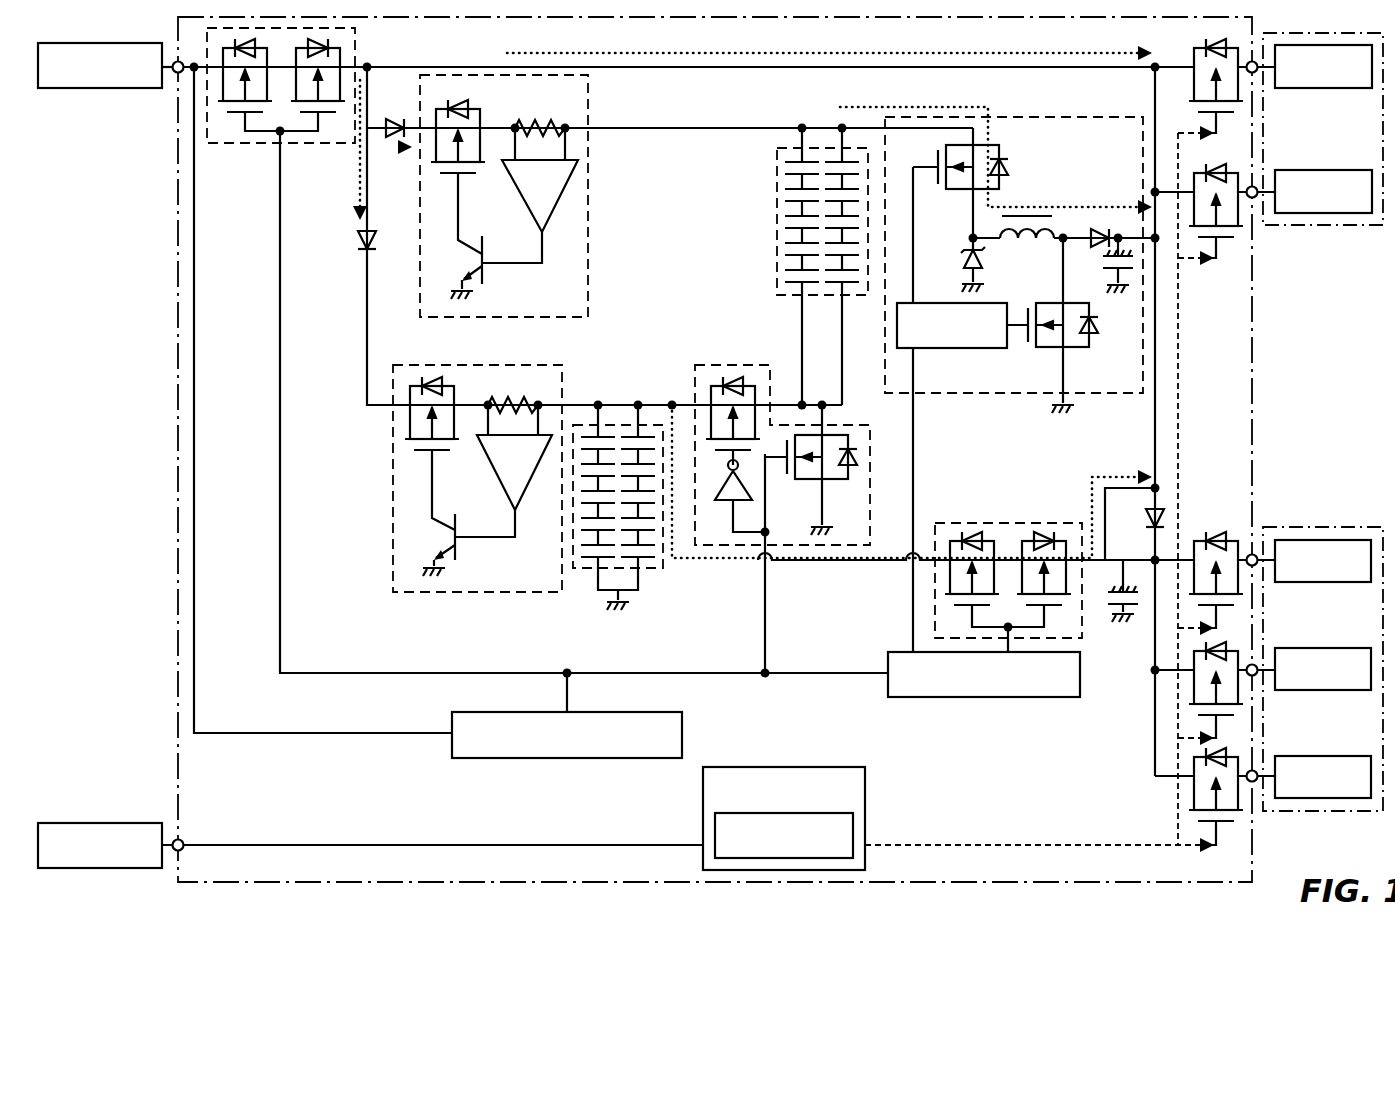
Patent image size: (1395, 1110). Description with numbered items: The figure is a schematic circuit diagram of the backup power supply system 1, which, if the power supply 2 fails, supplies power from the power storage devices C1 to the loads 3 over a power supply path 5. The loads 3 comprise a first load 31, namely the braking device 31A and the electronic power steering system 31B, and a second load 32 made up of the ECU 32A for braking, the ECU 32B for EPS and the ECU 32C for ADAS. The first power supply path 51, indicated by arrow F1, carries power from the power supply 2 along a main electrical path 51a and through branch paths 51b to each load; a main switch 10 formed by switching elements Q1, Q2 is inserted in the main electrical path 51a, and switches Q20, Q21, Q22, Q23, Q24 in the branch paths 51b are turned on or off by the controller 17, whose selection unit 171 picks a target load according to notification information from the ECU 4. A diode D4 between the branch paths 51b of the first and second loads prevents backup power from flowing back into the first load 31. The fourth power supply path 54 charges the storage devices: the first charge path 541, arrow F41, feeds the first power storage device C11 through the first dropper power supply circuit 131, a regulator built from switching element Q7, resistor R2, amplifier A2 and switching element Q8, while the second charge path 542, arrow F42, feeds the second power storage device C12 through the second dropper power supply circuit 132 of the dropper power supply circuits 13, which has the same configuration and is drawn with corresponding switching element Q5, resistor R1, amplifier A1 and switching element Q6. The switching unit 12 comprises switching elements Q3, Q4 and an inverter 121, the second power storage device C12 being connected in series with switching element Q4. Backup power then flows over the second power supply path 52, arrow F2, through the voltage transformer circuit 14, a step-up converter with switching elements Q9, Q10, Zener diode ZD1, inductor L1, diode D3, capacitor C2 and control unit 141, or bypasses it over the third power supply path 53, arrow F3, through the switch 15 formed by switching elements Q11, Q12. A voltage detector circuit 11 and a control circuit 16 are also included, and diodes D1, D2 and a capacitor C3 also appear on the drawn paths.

The backup power supply system 1 is at (178, 215).
The power supply 2 is at (140, 90).
The loads 3 is at (1310, 422).
The ECU 4 is at (137, 830).
The power supply path 5 is at (686, 49).
The main switch 10 is at (301, 115).
The voltage detector circuit 11 is at (520, 759).
The switching unit 12 is at (782, 464).
The inverter 121 is at (723, 500).
The dropper power supply circuits 13 is at (498, 333).
The first dropper power supply circuit 131 is at (437, 459).
The second dropper power supply circuit 132 is at (552, 196).
The voltage transformer circuit 14 is at (1020, 242).
The control unit 141 is at (955, 349).
The switch 15 is at (1018, 542).
The control circuit 16 is at (950, 698).
The controller 17 is at (951, 501).
The selection unit 171 is at (850, 832).
The first load 31 is at (1310, 178).
The braking device 31A is at (1338, 88).
The electronic power steering system 31B is at (1337, 214).
The second load 32 is at (1310, 583).
The ECU for braking 32A is at (1340, 540).
The ECU for EPS 32B is at (1345, 637).
The ECU for ADAS 32C is at (1340, 756).
The first power supply path 51 is at (758, 68).
The main electrical path 51a is at (698, 68).
The branch paths 51b is at (1162, 73).
The second power supply path 52 is at (867, 127).
The third power supply path 53 is at (847, 563).
The fourth power supply path 54 is at (372, 65).
The first charge path 541 is at (367, 368).
The second charge path 542 is at (642, 117).
The amplifier A1 is at (541, 186).
The amplifier A2 is at (507, 457).
The power storage devices C1 is at (720, 367).
The first power storage device C11 is at (611, 423).
The second power storage device C12 is at (777, 283).
The capacitor C2 is at (1102, 265).
The capacitor C3 is at (1115, 591).
The diode D1 is at (401, 116).
The diode D2 is at (384, 242).
The diode D3 is at (1101, 224).
The diode D4 is at (1137, 523).
The Zener diode ZD1 is at (996, 265).
The inductor L1 is at (1064, 211).
The resistor R1 is at (540, 116).
The resistor R2 is at (513, 391).
The switching element Q1 is at (223, 107).
The switching element Q2 is at (342, 50).
The switching element Q3 is at (723, 382).
The switching element Q4 is at (857, 396).
The switching element Q5 is at (452, 110).
The transistor Q6 is at (496, 247).
The switching element Q7 is at (415, 382).
The switching element Q8 is at (469, 527).
The switching element Q9 is at (973, 183).
The switching element Q10 is at (1052, 325).
The switching element Q11 is at (970, 540).
The switching element Q12 is at (1042, 540).
The switch Q20 is at (1205, 45).
The switch Q21 is at (1243, 217).
The switch Q22 is at (1212, 573).
The switch Q23 is at (1186, 705).
The switch Q24 is at (1188, 798).
The arrow F1 is at (793, 53).
The arrow F2 is at (1060, 207).
The arrow F3 is at (1118, 475).
The arrow F41 is at (358, 170).
The arrow F42 is at (396, 152).